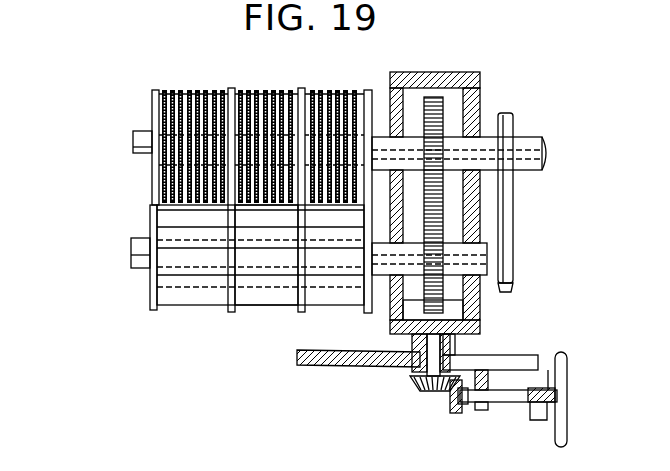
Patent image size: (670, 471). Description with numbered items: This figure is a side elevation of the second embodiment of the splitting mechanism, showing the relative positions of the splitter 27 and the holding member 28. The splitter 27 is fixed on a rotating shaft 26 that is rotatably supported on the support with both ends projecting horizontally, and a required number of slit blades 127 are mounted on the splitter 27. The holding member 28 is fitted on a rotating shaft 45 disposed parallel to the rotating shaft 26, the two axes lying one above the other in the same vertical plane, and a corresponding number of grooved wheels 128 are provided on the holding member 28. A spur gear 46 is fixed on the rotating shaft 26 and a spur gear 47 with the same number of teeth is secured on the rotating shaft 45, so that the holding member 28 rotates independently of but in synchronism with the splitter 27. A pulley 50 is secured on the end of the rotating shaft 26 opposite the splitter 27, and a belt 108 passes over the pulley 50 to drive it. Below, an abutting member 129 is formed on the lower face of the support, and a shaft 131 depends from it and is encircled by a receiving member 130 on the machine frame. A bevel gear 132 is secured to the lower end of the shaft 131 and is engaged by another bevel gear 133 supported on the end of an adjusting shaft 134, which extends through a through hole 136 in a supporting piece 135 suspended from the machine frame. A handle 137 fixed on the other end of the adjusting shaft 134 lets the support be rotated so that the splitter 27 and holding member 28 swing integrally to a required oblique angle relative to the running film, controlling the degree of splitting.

The splitter 27 is at (252, 174).
The slit blades 127 is at (302, 92).
The rotating shaft 26 is at (382, 100).
The spur gear 46 is at (447, 120).
The pulley 50 is at (513, 118).
The belt 108 is at (513, 285).
The holding member 28 is at (233, 277).
The grooved wheels 128 is at (305, 312).
The rotating shaft 45 is at (385, 278).
The spur gear 47 is at (450, 302).
The abutting member 129 is at (483, 328).
The receiving member 130 is at (457, 338).
The shaft 131 is at (425, 372).
The bevel gear 132 is at (430, 388).
The bevel gear 133 is at (453, 402).
The adjusting shaft 134 is at (500, 398).
The supporting piece 135 is at (322, 360).
The through hole 136 is at (550, 388).
The handle 137 is at (567, 365).